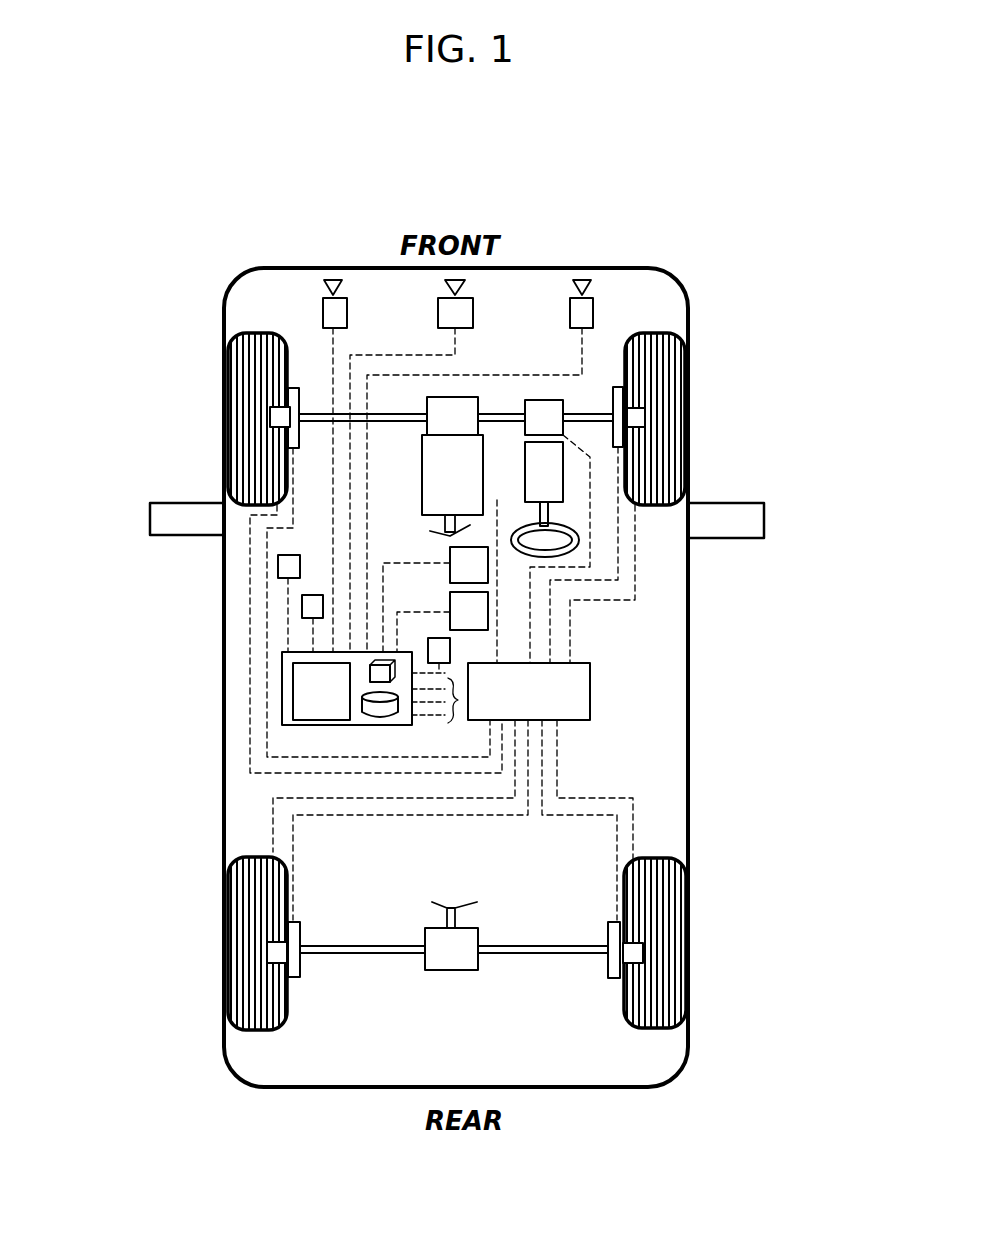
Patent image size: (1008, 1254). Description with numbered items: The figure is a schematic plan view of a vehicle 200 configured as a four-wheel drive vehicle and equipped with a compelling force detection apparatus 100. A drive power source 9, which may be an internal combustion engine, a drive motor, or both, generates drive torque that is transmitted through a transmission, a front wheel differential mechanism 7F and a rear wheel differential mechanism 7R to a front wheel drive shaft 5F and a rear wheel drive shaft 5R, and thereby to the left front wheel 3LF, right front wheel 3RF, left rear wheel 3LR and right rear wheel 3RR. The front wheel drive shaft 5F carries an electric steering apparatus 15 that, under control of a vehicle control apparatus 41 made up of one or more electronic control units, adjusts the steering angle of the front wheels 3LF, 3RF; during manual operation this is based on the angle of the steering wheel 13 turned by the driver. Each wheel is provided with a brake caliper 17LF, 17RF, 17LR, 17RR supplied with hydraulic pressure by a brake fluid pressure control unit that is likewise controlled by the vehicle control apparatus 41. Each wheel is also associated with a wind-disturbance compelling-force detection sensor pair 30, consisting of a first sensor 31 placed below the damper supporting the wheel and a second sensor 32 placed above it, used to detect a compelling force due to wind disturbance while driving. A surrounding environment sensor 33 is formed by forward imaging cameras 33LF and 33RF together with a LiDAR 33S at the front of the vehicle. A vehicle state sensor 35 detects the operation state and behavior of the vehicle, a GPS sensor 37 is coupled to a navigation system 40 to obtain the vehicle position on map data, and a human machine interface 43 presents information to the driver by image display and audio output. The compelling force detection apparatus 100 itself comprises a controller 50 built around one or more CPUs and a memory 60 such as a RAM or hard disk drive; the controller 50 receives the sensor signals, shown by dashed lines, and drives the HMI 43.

The vehicle 200 is at (127, 169).
The left front wheel 3LF is at (233, 355).
The right front wheel 3RF is at (660, 345).
The left rear wheel 3LR is at (233, 885).
The right rear wheel 3RR is at (673, 883).
The front wheel drive shaft 5F is at (382, 413).
The rear wheel drive shaft 5R is at (500, 948).
The front wheel differential mechanism 7F is at (458, 397).
The rear wheel differential mechanism 7R is at (448, 970).
The drive power source 9 is at (422, 468).
The steering wheel 13 is at (523, 527).
The electric steering apparatus 15 is at (553, 398).
The brake caliper 17LF is at (297, 382).
The brake caliper 17RF is at (613, 387).
The brake caliper 17LR is at (290, 977).
The brake caliper 17RR is at (608, 978).
The wind-disturbance compelling-force detection sensor pair 30 is at (453, 681).
The first sensor 31 is at (453, 681).
The second sensor 32 is at (273, 412).
The surrounding environment sensor 33 is at (450, 650).
The forward imaging camera 33LF is at (322, 298).
The Light Detection and Ranging (LiDAR) 33S is at (477, 298).
The forward imaging camera 33RF is at (593, 308).
The vehicle state sensor 35 is at (448, 548).
The GPS sensor 37 is at (450, 598).
The navigation system 40 is at (278, 567).
The vehicle control apparatus 41 is at (590, 690).
The human machine interface (HMI) 43 is at (302, 607).
The controller 50 is at (303, 720).
The memory 60 is at (403, 707).
The compelling force detection apparatus 100 is at (294, 723).